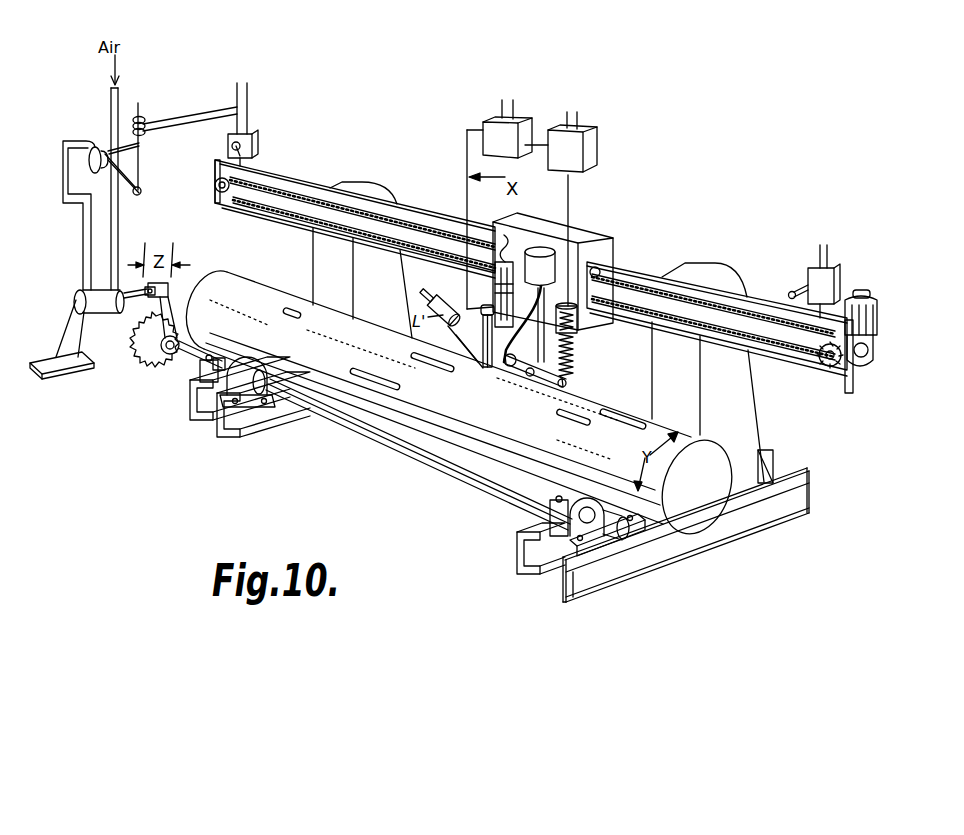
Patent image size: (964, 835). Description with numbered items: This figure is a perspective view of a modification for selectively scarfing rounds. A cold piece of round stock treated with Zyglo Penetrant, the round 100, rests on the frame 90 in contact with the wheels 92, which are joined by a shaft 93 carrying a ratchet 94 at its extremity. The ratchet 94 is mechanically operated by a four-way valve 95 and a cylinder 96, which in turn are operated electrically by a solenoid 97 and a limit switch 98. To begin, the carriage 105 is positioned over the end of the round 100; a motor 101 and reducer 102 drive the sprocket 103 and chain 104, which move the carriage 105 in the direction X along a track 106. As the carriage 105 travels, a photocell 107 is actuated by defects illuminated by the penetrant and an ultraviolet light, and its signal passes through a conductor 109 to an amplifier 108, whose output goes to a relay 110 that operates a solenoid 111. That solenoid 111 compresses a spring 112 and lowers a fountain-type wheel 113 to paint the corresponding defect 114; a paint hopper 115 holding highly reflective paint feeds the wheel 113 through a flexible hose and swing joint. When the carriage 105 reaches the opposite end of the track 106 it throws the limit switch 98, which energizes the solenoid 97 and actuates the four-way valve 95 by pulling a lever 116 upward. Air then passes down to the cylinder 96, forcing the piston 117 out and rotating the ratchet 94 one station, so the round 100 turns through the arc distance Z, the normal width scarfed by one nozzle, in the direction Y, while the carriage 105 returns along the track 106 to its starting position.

The frame 90 is at (653, 548).
The wheels 92 is at (235, 397).
The shaft 93 is at (343, 421).
The ratchet 94 is at (135, 362).
The four-way valve 95 is at (90, 162).
The cylinder 96 is at (73, 293).
The solenoid 97 is at (146, 117).
The limit switch 98 is at (255, 143).
The round 100 is at (700, 503).
The motor 101 is at (878, 315).
The reducer 102 is at (874, 352).
The sprocket 103 is at (840, 364).
The chain 104 is at (795, 362).
The carriage 105 is at (597, 233).
The track 106 is at (664, 268).
The photocell 107 is at (483, 366).
The amplifier 108 is at (520, 122).
The conductor 109 is at (467, 195).
The relay 110 is at (587, 130).
The solenoid 111 is at (578, 325).
The spring 112 is at (574, 373).
The fountain-type wheel 113 is at (507, 372).
The defect 114 is at (532, 388).
The paint hopper 115 is at (547, 250).
The lever 116 is at (127, 180).
The piston 117 is at (137, 286).